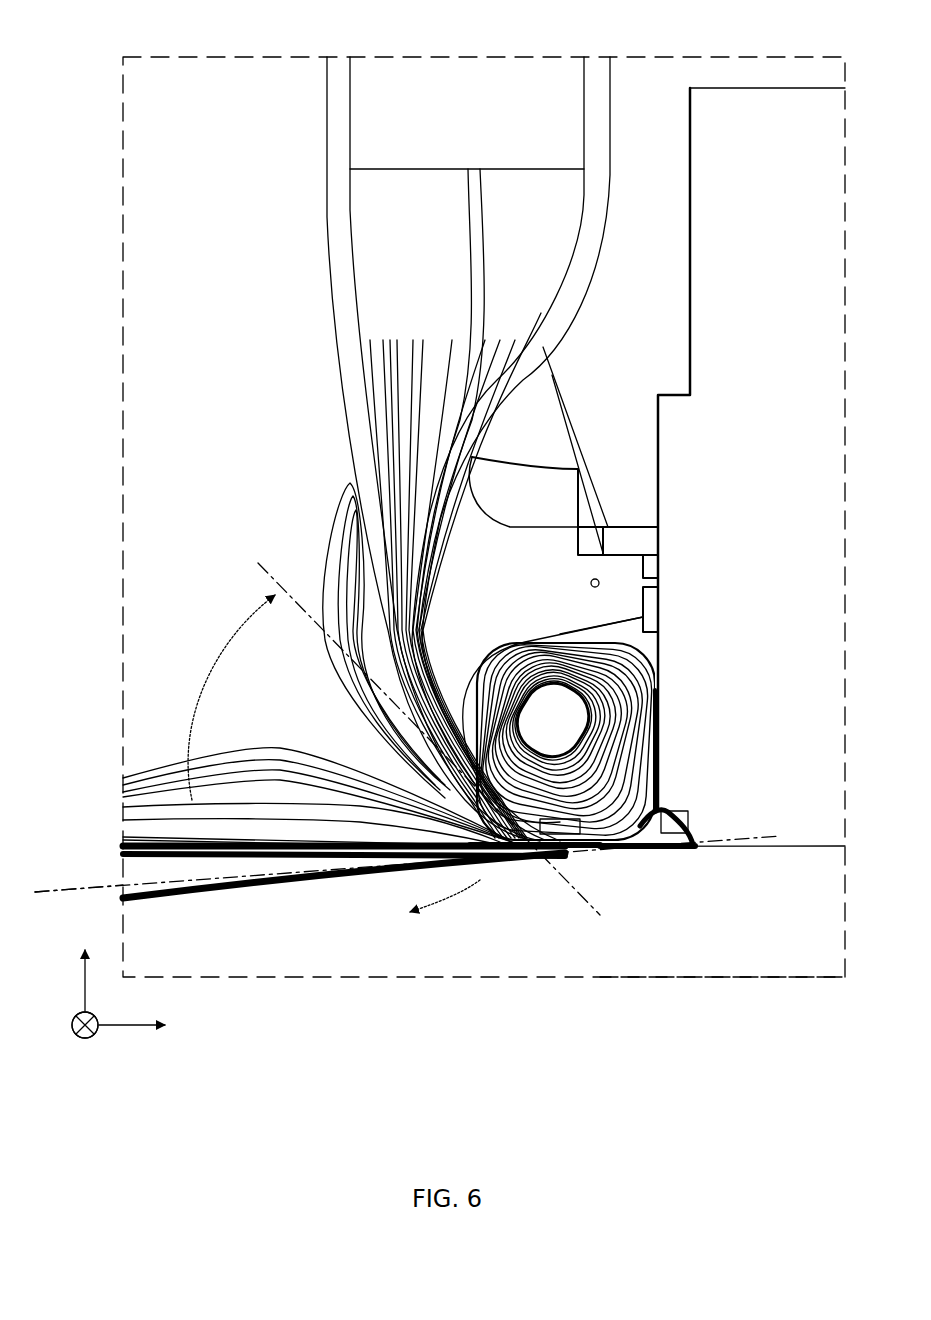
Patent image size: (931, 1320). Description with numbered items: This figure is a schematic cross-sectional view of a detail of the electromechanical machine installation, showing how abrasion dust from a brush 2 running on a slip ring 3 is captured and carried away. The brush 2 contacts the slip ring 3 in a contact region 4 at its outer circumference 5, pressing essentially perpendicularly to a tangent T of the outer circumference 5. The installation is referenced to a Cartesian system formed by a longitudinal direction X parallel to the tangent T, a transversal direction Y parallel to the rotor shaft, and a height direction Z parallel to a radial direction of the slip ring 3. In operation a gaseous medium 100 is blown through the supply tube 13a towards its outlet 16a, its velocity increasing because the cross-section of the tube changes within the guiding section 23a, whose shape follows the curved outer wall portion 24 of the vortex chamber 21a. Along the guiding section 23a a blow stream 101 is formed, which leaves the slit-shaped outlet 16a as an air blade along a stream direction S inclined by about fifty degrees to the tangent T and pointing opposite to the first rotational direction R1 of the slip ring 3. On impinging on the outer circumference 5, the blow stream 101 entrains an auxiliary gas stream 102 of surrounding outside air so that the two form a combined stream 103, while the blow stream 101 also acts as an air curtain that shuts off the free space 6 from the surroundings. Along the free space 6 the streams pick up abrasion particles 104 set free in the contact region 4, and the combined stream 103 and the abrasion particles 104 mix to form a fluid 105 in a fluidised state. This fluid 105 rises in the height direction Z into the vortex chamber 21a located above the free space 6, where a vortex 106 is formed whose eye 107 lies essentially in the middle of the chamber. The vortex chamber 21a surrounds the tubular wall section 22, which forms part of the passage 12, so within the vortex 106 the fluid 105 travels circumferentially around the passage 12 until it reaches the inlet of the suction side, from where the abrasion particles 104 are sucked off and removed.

The brush 2 is at (845, 680).
The slip ring 3 is at (708, 958).
The contact region 4 is at (735, 851).
The outer circumference 5 is at (815, 838).
The free space 6 is at (640, 828).
The passage 12 is at (676, 405).
The supply tube 13a is at (342, 95).
The outlet 16a is at (512, 873).
The vortex chamber 21a is at (610, 638).
The tubular wall section 22 is at (660, 670).
The guiding section 23a is at (445, 690).
The curved outer wall portion 24 is at (478, 668).
The gaseous medium 100 is at (413, 393).
The blow stream 101 is at (462, 797).
The auxiliary gas stream 102 is at (345, 553).
The combined stream 103 is at (598, 872).
The abrasion particles 104 is at (672, 838).
The fluid 105 is at (668, 783).
The vortex 106 is at (668, 688).
The eye 107 is at (572, 730).
The tangent T is at (95, 880).
The stream direction S is at (578, 903).
The longitudinal direction X is at (231, 697).
The first rotational direction R1 is at (445, 896).
The height direction Z is at (135, 982).
The transversal direction Y is at (85, 1040).